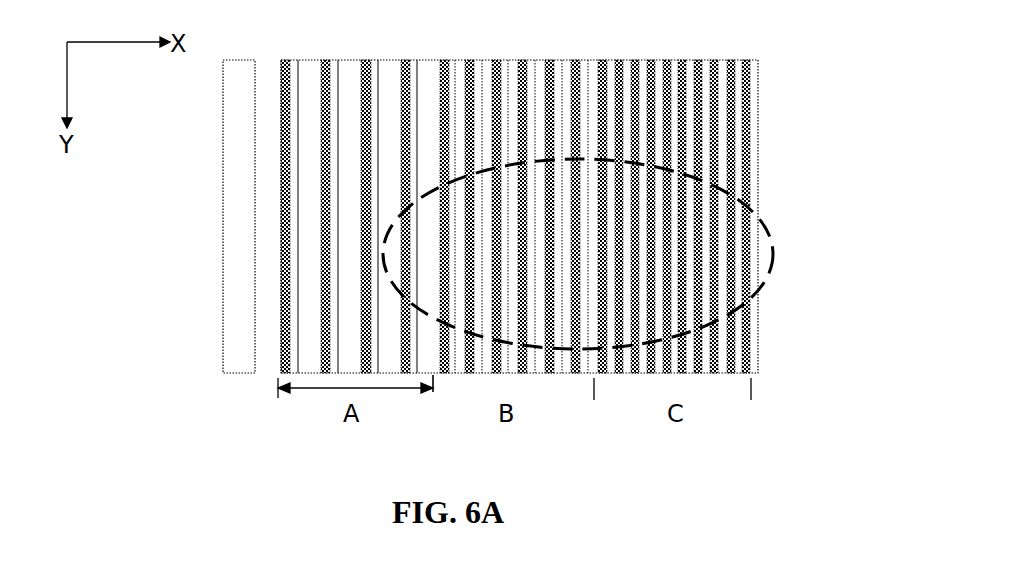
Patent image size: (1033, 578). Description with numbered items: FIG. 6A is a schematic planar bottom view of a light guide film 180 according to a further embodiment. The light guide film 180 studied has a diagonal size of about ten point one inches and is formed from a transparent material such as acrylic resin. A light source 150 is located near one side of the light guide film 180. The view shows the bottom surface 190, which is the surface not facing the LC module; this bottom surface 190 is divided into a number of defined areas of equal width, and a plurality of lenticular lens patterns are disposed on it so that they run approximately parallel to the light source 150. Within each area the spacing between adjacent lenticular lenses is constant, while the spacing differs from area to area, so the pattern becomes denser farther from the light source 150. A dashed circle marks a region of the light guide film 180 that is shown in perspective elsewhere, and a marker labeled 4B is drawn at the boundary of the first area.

The light source 150 is at (237, 303).
The light guide film 180 is at (443, 60).
The bottom surface 190 is at (637, 72).
The section line reference to FIG. 4B is at (433, 392).